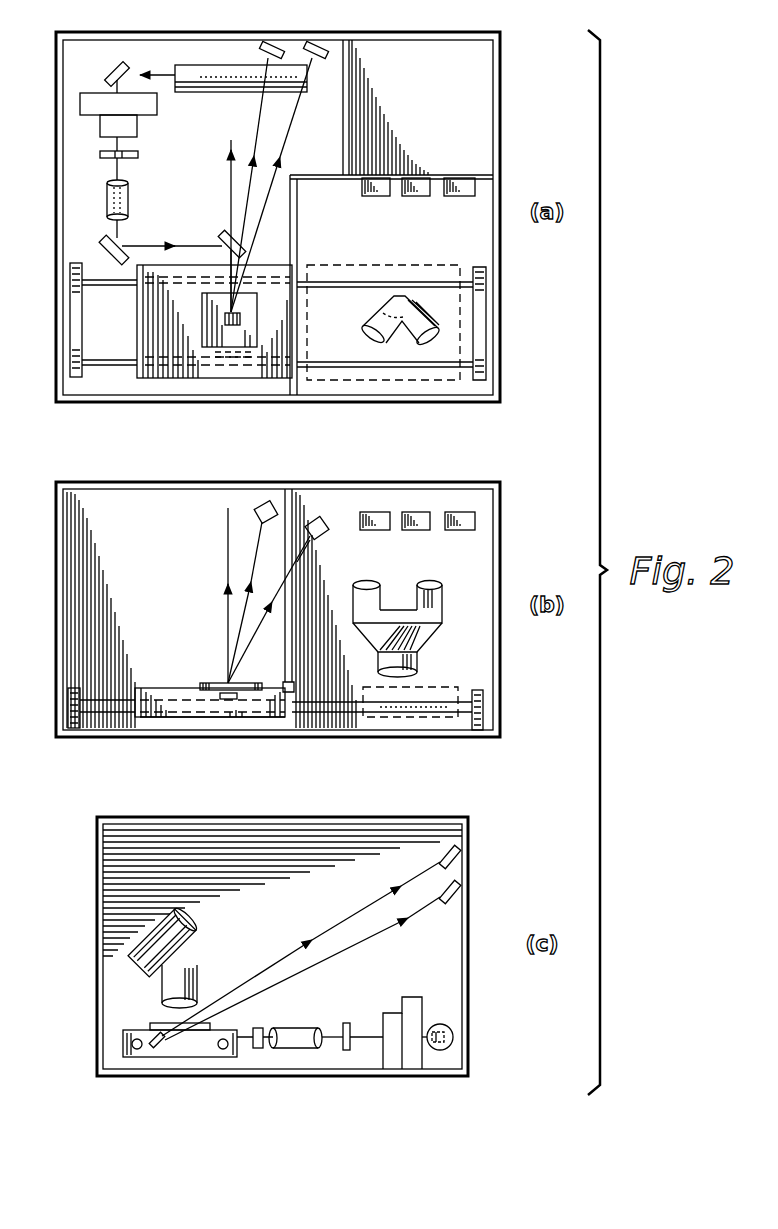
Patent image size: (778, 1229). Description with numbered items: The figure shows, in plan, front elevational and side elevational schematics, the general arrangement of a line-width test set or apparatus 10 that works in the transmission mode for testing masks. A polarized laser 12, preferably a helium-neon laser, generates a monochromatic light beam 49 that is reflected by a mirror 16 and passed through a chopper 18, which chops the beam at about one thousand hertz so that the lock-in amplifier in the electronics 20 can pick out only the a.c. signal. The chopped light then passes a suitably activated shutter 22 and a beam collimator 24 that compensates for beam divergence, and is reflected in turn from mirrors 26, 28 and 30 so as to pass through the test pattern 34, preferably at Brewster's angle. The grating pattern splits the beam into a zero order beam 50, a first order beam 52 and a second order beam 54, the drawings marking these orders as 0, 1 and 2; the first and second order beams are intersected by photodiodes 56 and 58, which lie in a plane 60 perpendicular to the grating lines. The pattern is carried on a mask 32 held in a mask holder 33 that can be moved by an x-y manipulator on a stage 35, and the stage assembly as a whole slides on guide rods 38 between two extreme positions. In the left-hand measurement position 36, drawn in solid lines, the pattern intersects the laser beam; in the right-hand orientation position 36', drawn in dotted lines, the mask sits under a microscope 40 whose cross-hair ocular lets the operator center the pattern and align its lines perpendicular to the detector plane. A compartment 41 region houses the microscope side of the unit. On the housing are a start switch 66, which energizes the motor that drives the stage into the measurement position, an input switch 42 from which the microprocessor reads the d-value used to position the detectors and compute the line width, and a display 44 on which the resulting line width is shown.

The test set or apparatus 10 is at (517, 104).
The polarized laser 12 is at (222, 64).
The mirror 16 is at (126, 64).
The chopper 18 is at (98, 127).
The electronics 20 is at (460, 44).
The shutter 22 is at (101, 157).
The beam collimator 24 is at (107, 202).
The mirror 26 is at (106, 241).
The mirror 28 is at (226, 240).
The mirror 30 is at (220, 358).
The mask 32 is at (248, 348).
The mask holder 33 is at (180, 378).
The test pattern 34 is at (224, 320).
The stage 35 is at (148, 372).
The measurement position 36 is at (204, 358).
The orientation position 36' is at (396, 352).
The guide rods 38 is at (111, 359).
The microscope 40 is at (371, 324).
The observation compartment 41 is at (488, 248).
The input switch 42 is at (458, 198).
The display 44 is at (416, 198).
The light beam 49 is at (158, 62).
The zero order beam 50 is at (228, 151).
The first order beam 52 is at (256, 126).
The second order beam 54 is at (292, 124).
The photodiode 56 is at (270, 44).
The photodiode 58 is at (316, 42).
The plane 60 is at (126, 34).
The start switch 66 is at (376, 198).
The zero order diffraction beam 0 is at (226, 556).
The first order diffraction beam 1 is at (257, 556).
The second order diffraction beam 2 is at (284, 587).